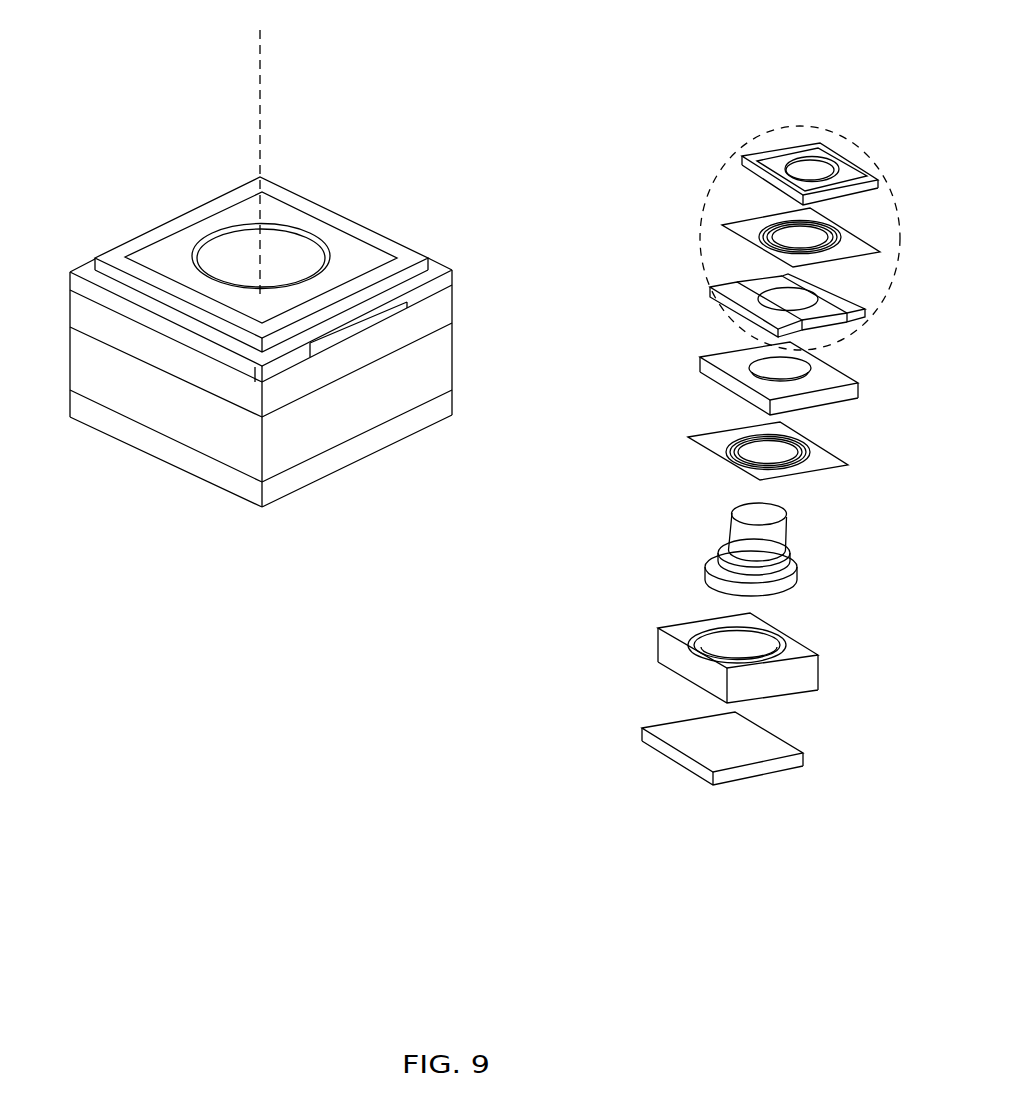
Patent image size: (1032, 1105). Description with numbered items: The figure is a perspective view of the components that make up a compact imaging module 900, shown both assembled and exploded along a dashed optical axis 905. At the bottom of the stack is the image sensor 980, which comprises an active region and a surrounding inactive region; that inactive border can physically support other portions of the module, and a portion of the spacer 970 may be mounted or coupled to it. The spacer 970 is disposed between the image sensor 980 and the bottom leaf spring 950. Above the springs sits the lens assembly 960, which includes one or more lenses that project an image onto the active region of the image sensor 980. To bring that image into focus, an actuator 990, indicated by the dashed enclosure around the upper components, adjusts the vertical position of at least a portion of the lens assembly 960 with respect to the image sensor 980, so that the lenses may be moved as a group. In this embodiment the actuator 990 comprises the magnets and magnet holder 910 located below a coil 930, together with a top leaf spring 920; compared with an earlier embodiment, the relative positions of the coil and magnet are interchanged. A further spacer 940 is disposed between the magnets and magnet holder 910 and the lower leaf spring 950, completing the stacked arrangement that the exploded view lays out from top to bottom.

The compact imaging module 900 is at (515, 50).
The optical axis 905 is at (261, 107).
The magnets and magnet holder 910 is at (710, 287).
The top leaf spring 920 is at (440, 264).
The coil 930 is at (398, 241).
The spacer 940 is at (700, 357).
The bottom leaf spring 950 is at (412, 345).
The lens assembly 960 is at (705, 560).
The spacer 970 is at (657, 657).
The image sensor 980 is at (300, 488).
The actuator 990 is at (752, 142).